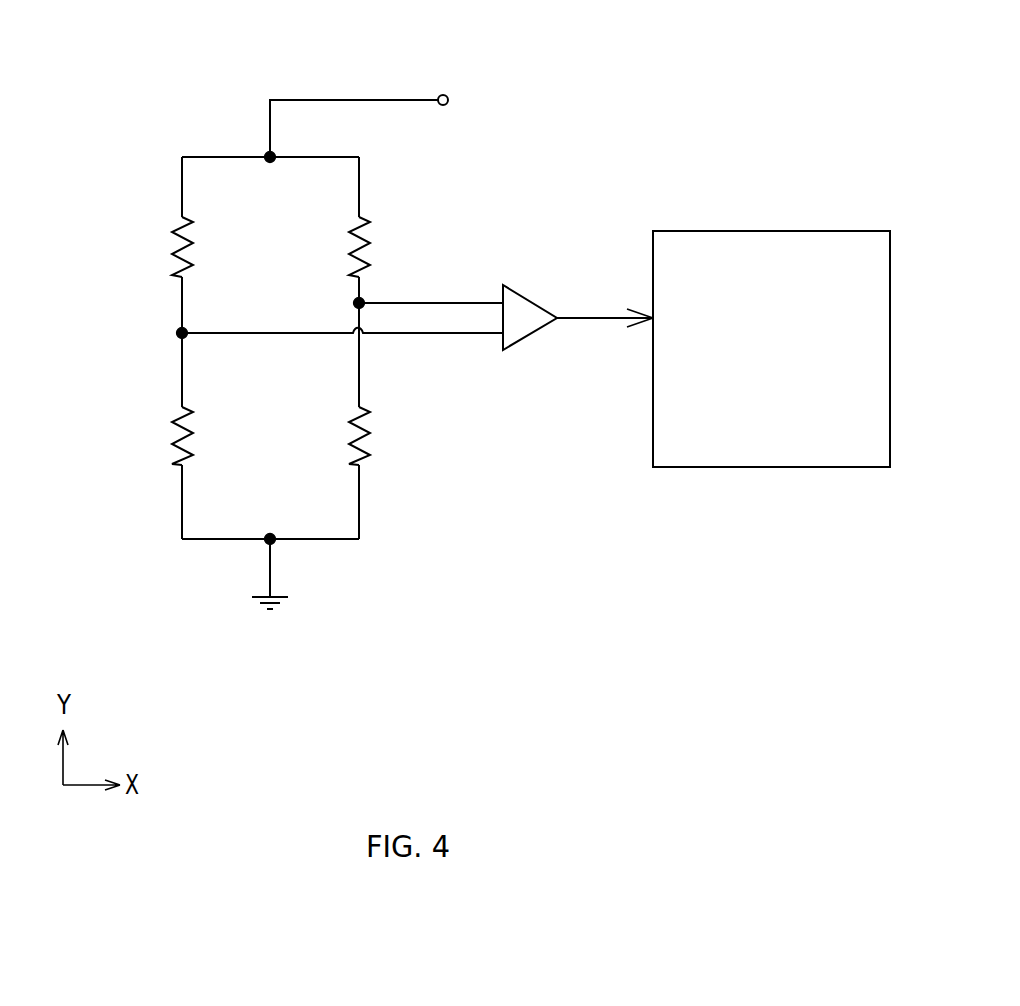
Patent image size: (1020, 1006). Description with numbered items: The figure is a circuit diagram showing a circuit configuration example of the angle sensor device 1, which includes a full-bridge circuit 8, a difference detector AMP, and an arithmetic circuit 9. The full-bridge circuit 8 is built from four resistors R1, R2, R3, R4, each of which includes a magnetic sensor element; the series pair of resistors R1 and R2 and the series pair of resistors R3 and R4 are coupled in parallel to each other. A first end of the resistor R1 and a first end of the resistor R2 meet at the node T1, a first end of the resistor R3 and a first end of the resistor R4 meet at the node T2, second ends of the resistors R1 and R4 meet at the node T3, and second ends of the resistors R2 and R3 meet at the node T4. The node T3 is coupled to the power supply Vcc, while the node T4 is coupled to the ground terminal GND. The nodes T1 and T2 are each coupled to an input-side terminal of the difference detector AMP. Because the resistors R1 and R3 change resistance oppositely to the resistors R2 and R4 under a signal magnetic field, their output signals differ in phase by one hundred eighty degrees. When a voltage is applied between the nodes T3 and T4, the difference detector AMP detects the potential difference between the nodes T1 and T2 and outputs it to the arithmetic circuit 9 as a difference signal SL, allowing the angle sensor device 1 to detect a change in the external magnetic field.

The angle sensor device 1 is at (595, 70).
The full-bridge circuit 8 is at (383, 562).
The arithmetic circuit 9 is at (803, 468).
The resistor R1 is at (194, 239).
The resistor R2 is at (194, 428).
The resistor R3 is at (371, 428).
The resistor R4 is at (371, 239).
The node T1 is at (186, 329).
The node T2 is at (363, 299).
The node T3 is at (272, 162).
The node T4 is at (274, 535).
The difference signal SL is at (578, 317).
The difference detector AMP is at (532, 334).
The power supply Vcc is at (481, 100).
The ground terminal GND is at (222, 621).